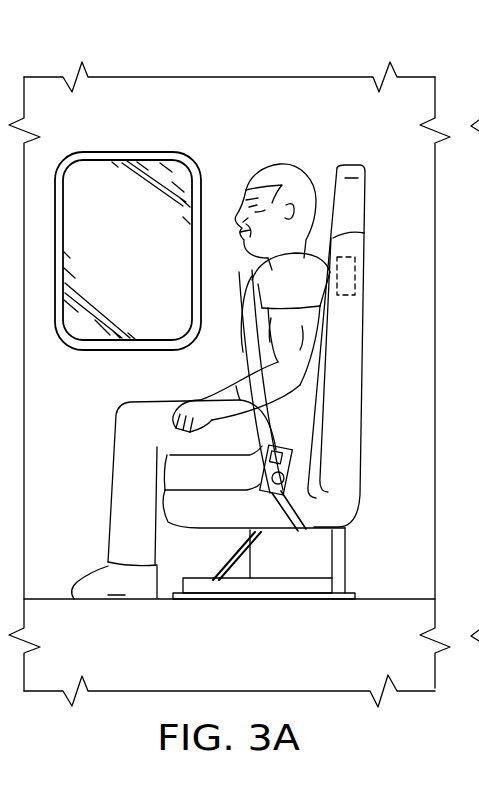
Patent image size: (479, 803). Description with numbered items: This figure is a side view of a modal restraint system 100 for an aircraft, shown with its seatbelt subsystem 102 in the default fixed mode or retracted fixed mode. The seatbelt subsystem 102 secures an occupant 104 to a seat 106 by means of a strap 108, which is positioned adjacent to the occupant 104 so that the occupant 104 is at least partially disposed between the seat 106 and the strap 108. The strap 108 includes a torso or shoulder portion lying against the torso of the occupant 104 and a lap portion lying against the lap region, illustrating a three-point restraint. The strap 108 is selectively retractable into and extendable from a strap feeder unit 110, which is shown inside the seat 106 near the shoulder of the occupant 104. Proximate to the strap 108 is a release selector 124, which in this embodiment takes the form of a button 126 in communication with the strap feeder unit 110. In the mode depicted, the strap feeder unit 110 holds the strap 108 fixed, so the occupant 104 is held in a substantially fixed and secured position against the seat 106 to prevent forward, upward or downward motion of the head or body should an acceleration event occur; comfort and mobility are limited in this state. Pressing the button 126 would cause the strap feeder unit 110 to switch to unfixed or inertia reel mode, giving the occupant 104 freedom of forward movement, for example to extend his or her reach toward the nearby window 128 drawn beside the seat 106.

The modal restraint system 100 is at (122, 101).
The seatbelt subsystem 102 is at (194, 464).
The occupant 104 is at (282, 163).
The seat 106 is at (162, 540).
The strap 108 is at (242, 336).
The strap feeder unit 110 is at (358, 282).
The release selector 124 is at (187, 550).
The button 126 is at (262, 481).
The window 128 is at (98, 351).